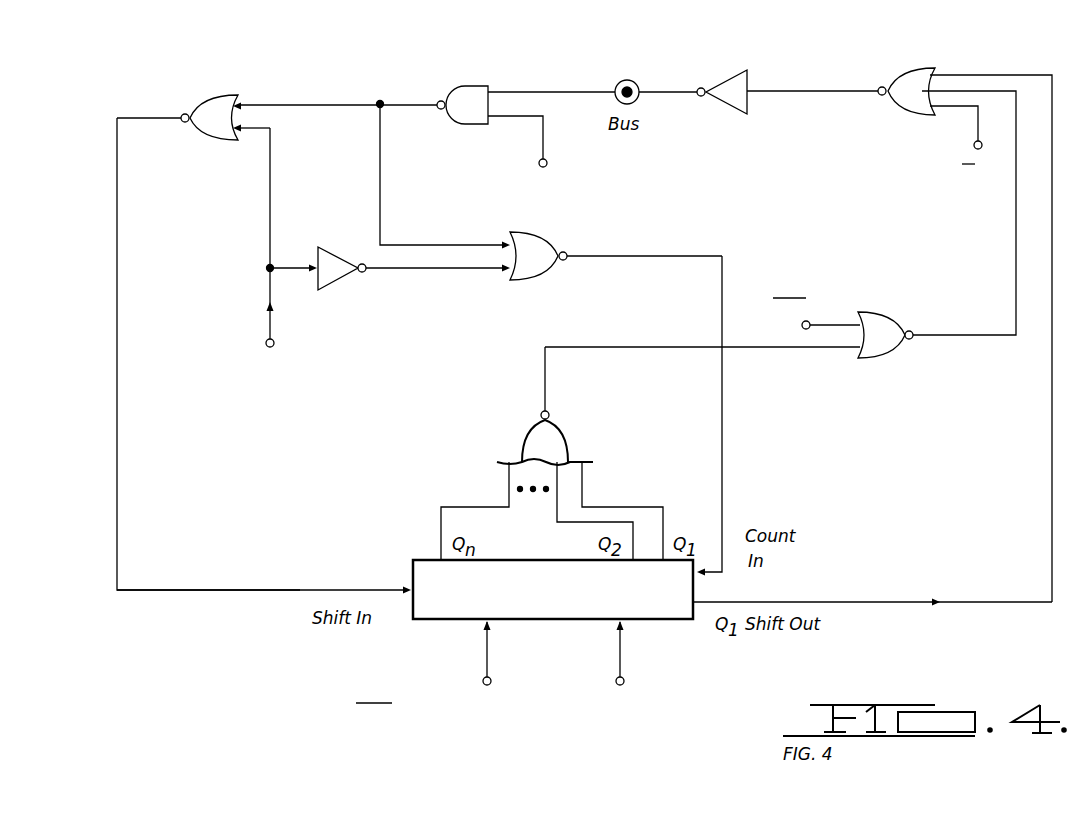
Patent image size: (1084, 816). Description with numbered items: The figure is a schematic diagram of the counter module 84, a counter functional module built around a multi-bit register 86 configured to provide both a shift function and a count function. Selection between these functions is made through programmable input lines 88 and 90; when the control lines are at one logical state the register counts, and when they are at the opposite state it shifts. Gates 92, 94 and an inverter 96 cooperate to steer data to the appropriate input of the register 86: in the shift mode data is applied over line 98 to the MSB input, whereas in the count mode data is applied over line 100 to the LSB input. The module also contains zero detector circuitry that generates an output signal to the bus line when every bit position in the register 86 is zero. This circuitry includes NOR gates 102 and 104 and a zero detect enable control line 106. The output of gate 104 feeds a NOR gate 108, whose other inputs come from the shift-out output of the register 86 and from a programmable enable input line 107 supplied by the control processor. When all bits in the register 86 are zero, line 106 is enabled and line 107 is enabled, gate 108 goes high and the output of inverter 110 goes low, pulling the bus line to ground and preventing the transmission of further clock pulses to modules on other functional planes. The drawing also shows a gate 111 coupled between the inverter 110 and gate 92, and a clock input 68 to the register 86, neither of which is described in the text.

The counter module 84 is at (97, 124).
The gate 92 is at (212, 108).
The AND gate 111 is at (458, 95).
The inverter 110 is at (728, 86).
The NOR gate 108 is at (910, 95).
The programmable enable input line 107 is at (972, 148).
The programmable input line 90 is at (266, 343).
The inverter 96 is at (334, 262).
The gate 94 is at (540, 248).
The line 100 is at (727, 448).
The zero detect enable control line ZDT 106 is at (812, 320).
The NOR gate 104 is at (888, 350).
The NOR gate 102 is at (556, 437).
The line 98 is at (205, 588).
The multi-bit register 86 is at (570, 605).
The programmable input line 88 is at (491, 686).
The clock input 68 is at (625, 682).